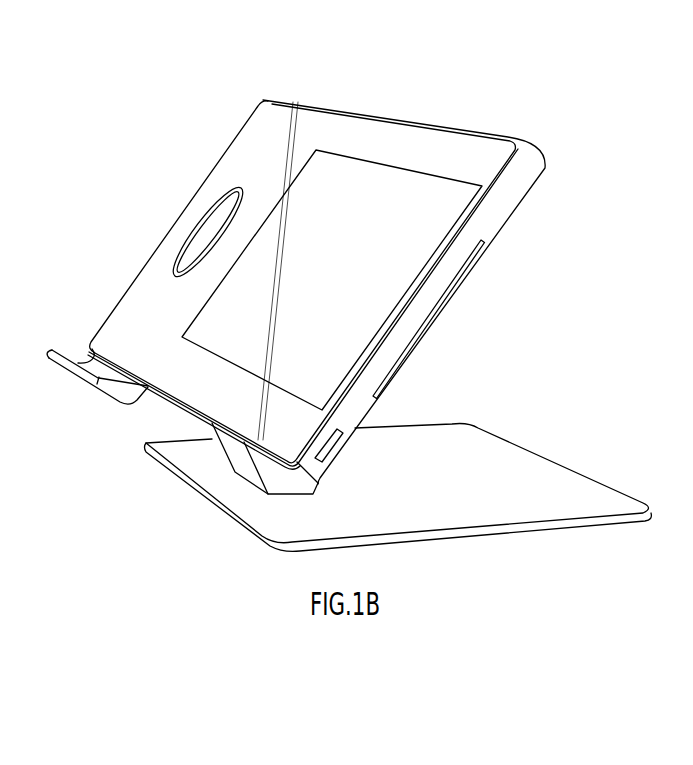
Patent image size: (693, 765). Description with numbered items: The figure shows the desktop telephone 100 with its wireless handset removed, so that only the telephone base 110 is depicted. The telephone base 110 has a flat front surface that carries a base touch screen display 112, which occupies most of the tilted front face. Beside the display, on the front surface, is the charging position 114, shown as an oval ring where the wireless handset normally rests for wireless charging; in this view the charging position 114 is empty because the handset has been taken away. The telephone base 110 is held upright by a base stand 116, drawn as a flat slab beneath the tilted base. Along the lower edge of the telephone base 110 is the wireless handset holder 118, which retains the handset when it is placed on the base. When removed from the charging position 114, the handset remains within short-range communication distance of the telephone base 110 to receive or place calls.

The desktop telephone 100 is at (146, 138).
The telephone base 110 is at (375, 145).
The base touch screen display 112 is at (450, 198).
The charging position 114 is at (183, 243).
The base stand 116 is at (582, 494).
The wireless handset holder 118 is at (108, 395).